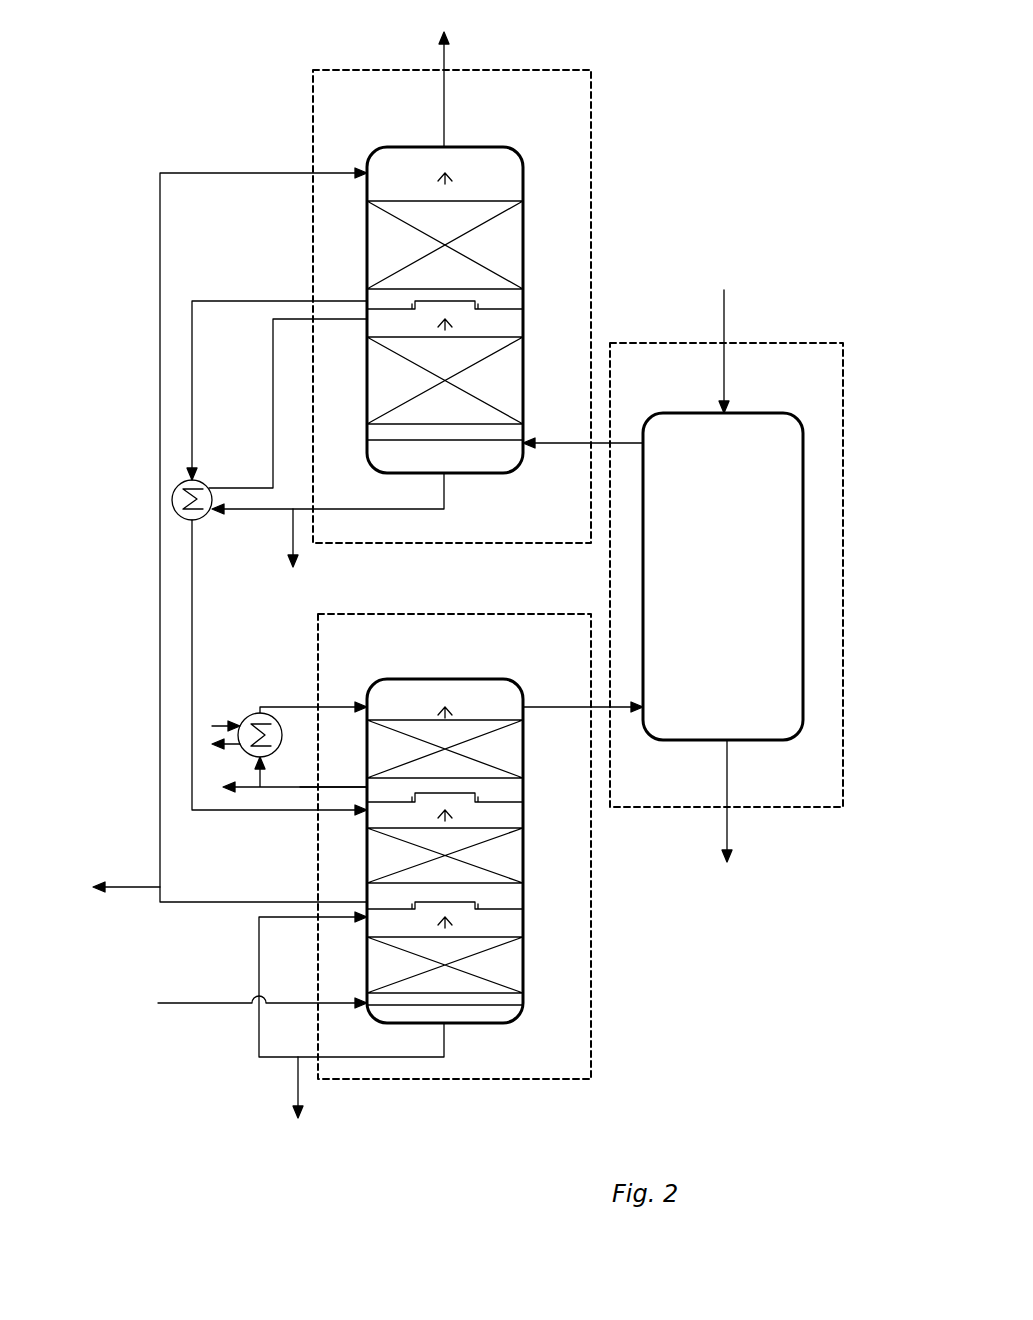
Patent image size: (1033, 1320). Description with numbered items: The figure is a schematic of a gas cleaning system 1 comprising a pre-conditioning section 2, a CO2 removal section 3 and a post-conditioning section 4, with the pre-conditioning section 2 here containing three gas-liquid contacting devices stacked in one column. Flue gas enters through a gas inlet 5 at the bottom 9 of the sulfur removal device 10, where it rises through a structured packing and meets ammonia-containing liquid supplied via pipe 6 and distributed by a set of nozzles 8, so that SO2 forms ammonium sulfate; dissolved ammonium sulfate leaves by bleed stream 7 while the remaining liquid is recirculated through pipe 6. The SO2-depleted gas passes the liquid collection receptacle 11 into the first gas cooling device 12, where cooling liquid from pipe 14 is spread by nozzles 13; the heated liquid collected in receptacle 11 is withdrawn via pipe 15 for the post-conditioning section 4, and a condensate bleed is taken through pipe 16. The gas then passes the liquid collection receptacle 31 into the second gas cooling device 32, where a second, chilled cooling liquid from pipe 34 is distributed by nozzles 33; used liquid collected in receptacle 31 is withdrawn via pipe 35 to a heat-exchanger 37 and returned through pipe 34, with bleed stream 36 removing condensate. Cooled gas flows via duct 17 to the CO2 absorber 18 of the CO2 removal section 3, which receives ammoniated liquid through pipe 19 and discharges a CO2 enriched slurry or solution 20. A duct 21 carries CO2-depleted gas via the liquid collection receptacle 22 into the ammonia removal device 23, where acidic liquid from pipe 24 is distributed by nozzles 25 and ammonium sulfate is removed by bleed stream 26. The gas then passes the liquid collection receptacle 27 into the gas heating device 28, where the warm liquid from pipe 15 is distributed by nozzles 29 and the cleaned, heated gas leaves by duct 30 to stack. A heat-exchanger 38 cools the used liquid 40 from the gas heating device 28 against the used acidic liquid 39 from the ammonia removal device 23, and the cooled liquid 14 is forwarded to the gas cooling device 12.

The gas cleaning system 1 is at (212, 63).
The pre-conditioning section 2 is at (610, 958).
The CO2 removal section 3 is at (789, 333).
The post-conditioning section 4 is at (606, 133).
The gas inlet 5 is at (185, 1003).
The pipe 6 is at (259, 1035).
The bleed stream 7 is at (298, 1093).
The set of nozzles 8 is at (443, 912).
The bottom 9 is at (505, 1012).
The sulfur removal device 10 is at (508, 963).
The liquid collection receptacle 11 is at (507, 908).
The gas cooling device 12 is at (500, 842).
The set of nozzles 13 is at (433, 812).
The pipe 14 is at (212, 812).
The pipe 15 is at (200, 902).
The pipe 16 is at (130, 887).
The duct 17 is at (548, 707).
The CO2 absorber 18 is at (782, 432).
The pipe 19 is at (724, 320).
The CO2 enriched slurry or solution 20 is at (728, 835).
The duct 21 is at (568, 440).
The liquid collection receptacle 22 is at (395, 447).
The ammonia removal device 23 is at (378, 396).
The pipe 24 is at (273, 408).
The set of nozzles 25 is at (423, 323).
The bleed stream 26 is at (293, 542).
The liquid collection receptacle 27 is at (500, 309).
The gas heating device 28 is at (512, 258).
The set of nozzles 29 is at (424, 172).
The duct 30 is at (444, 112).
The liquid collection receptacle 31 is at (503, 802).
The second gas cooling device 32 is at (508, 745).
The set of nozzles 33 is at (407, 706).
The pipe 34 is at (268, 705).
The pipe 35 is at (330, 787).
The bleed stream 36 is at (257, 788).
The heat-exchanger 37 is at (245, 716).
The heat-exchanger 38 is at (172, 505).
The used acidic liquid 39 is at (408, 510).
The used liquid 40 is at (240, 301).